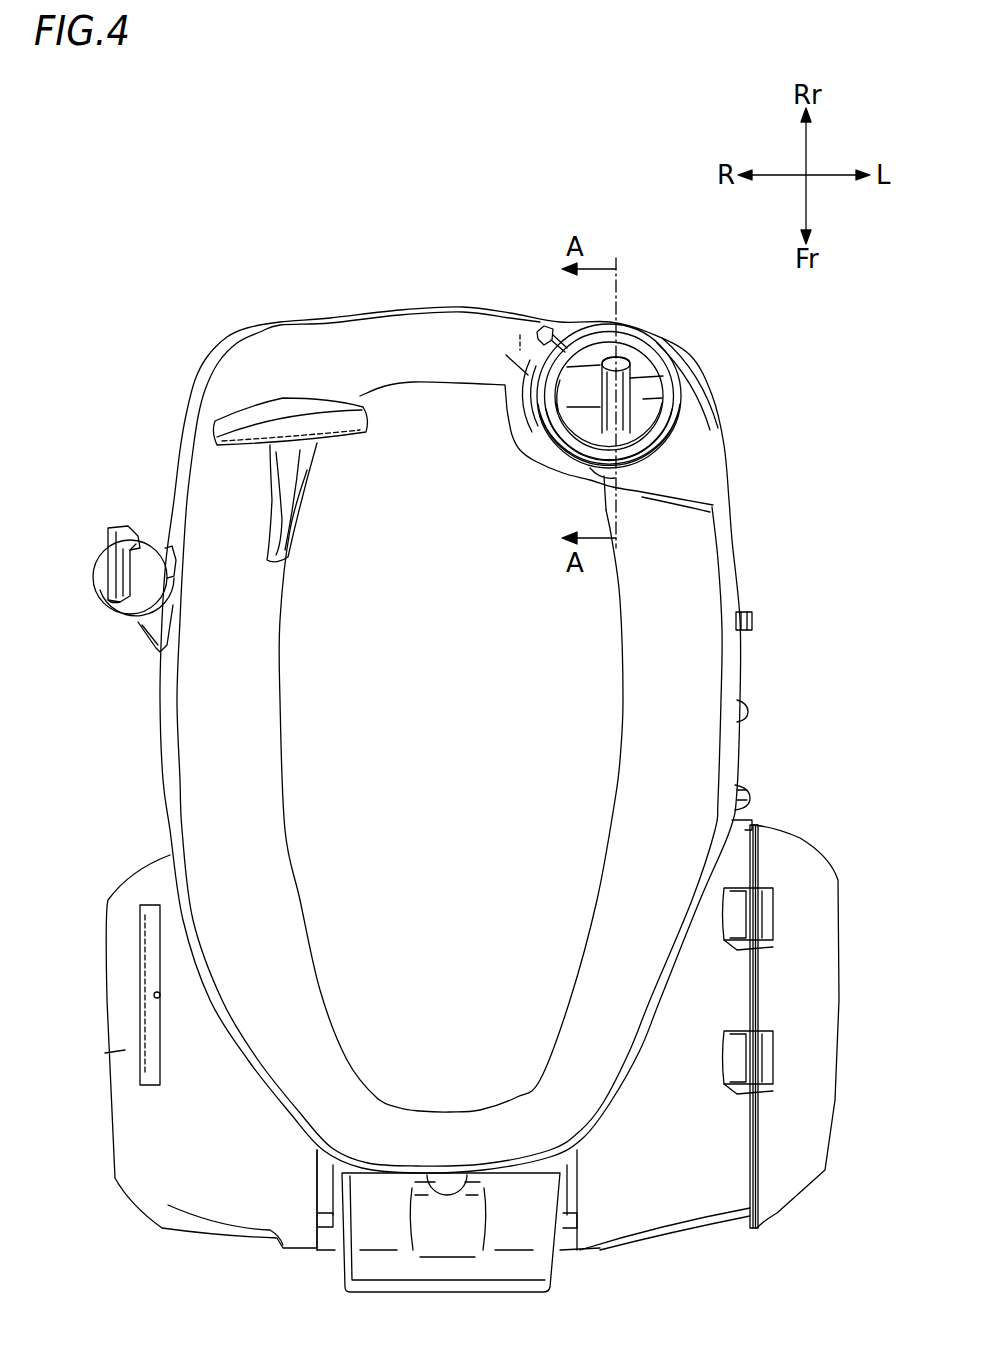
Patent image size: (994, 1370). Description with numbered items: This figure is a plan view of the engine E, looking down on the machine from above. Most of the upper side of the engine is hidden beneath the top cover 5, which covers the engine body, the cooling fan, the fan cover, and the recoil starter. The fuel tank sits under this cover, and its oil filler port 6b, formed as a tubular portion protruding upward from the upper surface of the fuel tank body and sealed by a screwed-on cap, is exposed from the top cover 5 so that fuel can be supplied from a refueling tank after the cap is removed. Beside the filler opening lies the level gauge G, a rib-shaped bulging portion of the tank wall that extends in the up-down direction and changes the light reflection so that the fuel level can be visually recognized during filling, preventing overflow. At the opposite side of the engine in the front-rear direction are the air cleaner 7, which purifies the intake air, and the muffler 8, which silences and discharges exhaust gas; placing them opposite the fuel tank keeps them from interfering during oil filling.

The engine E is at (158, 306).
The top cover 5 is at (265, 738).
The oil filler port 6b is at (578, 355).
The level gauge G is at (630, 390).
The air cleaner 7 is at (818, 1100).
The muffler 8 is at (125, 1050).